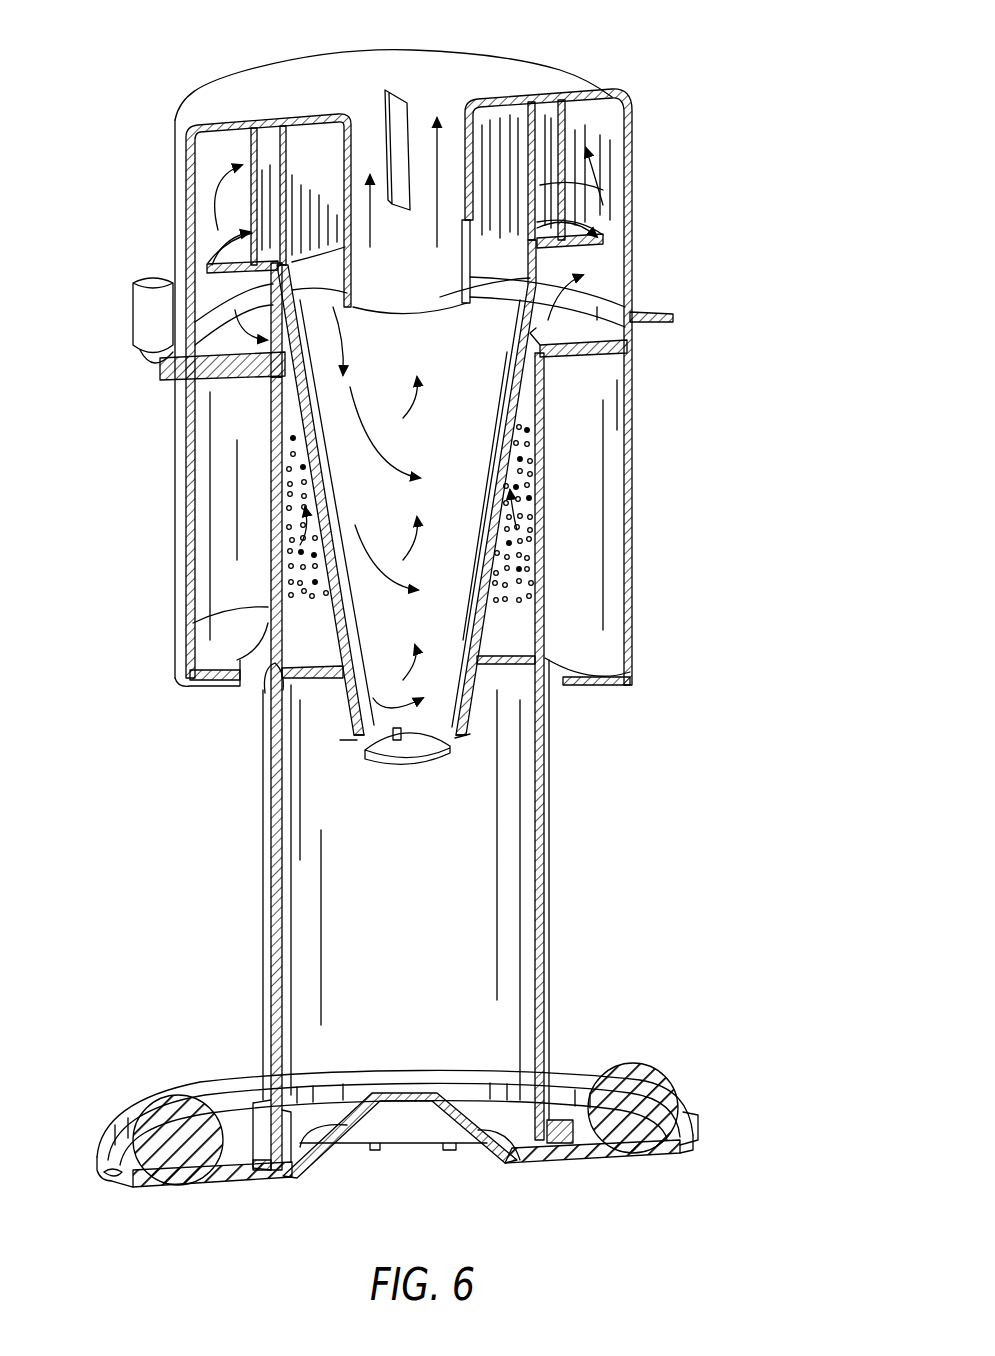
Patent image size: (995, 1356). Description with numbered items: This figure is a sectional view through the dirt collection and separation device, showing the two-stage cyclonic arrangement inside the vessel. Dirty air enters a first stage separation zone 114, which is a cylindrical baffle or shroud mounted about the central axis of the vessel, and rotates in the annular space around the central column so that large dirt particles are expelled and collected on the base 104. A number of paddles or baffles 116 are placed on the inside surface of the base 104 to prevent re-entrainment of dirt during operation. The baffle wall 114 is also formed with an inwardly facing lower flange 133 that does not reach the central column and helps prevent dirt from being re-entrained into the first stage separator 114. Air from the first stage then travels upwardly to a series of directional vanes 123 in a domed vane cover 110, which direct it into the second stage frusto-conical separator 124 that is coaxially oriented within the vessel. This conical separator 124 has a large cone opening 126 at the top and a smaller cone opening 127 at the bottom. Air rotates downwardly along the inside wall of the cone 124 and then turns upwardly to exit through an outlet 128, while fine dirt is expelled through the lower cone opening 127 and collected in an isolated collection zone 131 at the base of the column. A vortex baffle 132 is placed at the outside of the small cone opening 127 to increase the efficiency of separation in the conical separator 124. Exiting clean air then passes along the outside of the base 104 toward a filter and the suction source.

The domed vane cover 110 is at (260, 86).
The outlet 128 is at (443, 200).
The directional vanes 123 is at (567, 137).
The large cone opening 126 is at (543, 297).
The first stage separation zone 114 is at (632, 405).
The second stage frusto-conical separator 124 is at (507, 470).
The lower flange 133 is at (229, 682).
The small cone opening 127 is at (447, 737).
The vortex baffle 132 is at (450, 752).
The isolated collection zone 131 is at (503, 1035).
The paddles or baffles 116 is at (663, 1077).
The base 104 is at (507, 1165).